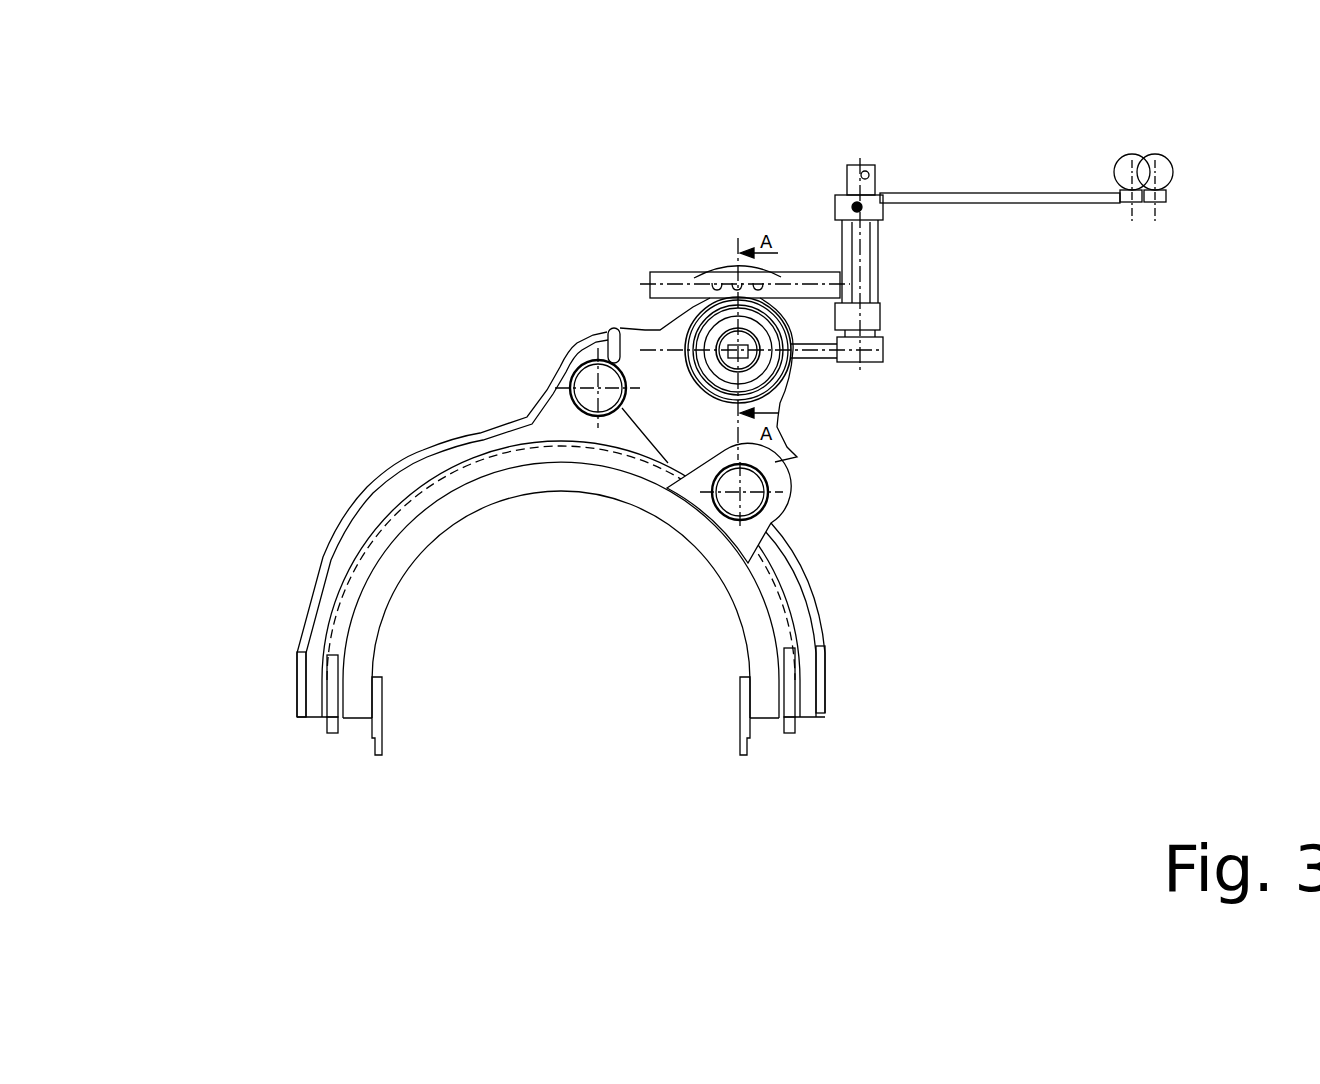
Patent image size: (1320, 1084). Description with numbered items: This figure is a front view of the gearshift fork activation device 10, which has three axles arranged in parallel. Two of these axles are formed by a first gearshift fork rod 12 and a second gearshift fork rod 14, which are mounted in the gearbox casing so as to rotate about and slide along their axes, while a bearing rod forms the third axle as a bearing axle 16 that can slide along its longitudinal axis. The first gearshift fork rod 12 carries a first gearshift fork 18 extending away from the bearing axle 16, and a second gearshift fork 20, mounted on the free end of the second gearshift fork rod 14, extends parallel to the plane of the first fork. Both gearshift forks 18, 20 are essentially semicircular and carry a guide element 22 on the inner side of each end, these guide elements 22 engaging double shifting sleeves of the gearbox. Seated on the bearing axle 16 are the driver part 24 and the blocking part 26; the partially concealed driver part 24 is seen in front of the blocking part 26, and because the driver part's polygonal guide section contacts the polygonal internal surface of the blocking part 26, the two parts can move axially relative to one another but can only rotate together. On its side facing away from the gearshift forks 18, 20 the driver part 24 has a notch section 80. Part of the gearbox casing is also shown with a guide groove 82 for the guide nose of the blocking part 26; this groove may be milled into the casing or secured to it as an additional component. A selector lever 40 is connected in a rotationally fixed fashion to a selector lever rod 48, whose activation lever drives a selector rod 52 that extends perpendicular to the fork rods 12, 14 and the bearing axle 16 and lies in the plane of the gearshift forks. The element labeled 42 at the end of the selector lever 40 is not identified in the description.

The gearshift fork activation device 10 is at (98, 776).
The first gearshift fork rod 12 is at (753, 498).
The second gearshift fork rod 14 is at (590, 380).
The bearing axle 16 is at (750, 357).
The first gearshift fork 18 is at (390, 598).
The second gearshift fork 20 is at (323, 565).
The guide element 22 is at (333, 734).
The driver part 24 is at (655, 333).
The blocking part 26 is at (600, 333).
The selector lever 40 is at (1016, 193).
The ball head 42 is at (1133, 154).
The selector lever rod 48 is at (868, 243).
The selector rod 52 is at (668, 272).
The notch section 80 is at (728, 282).
The guide groove 82 is at (776, 272).